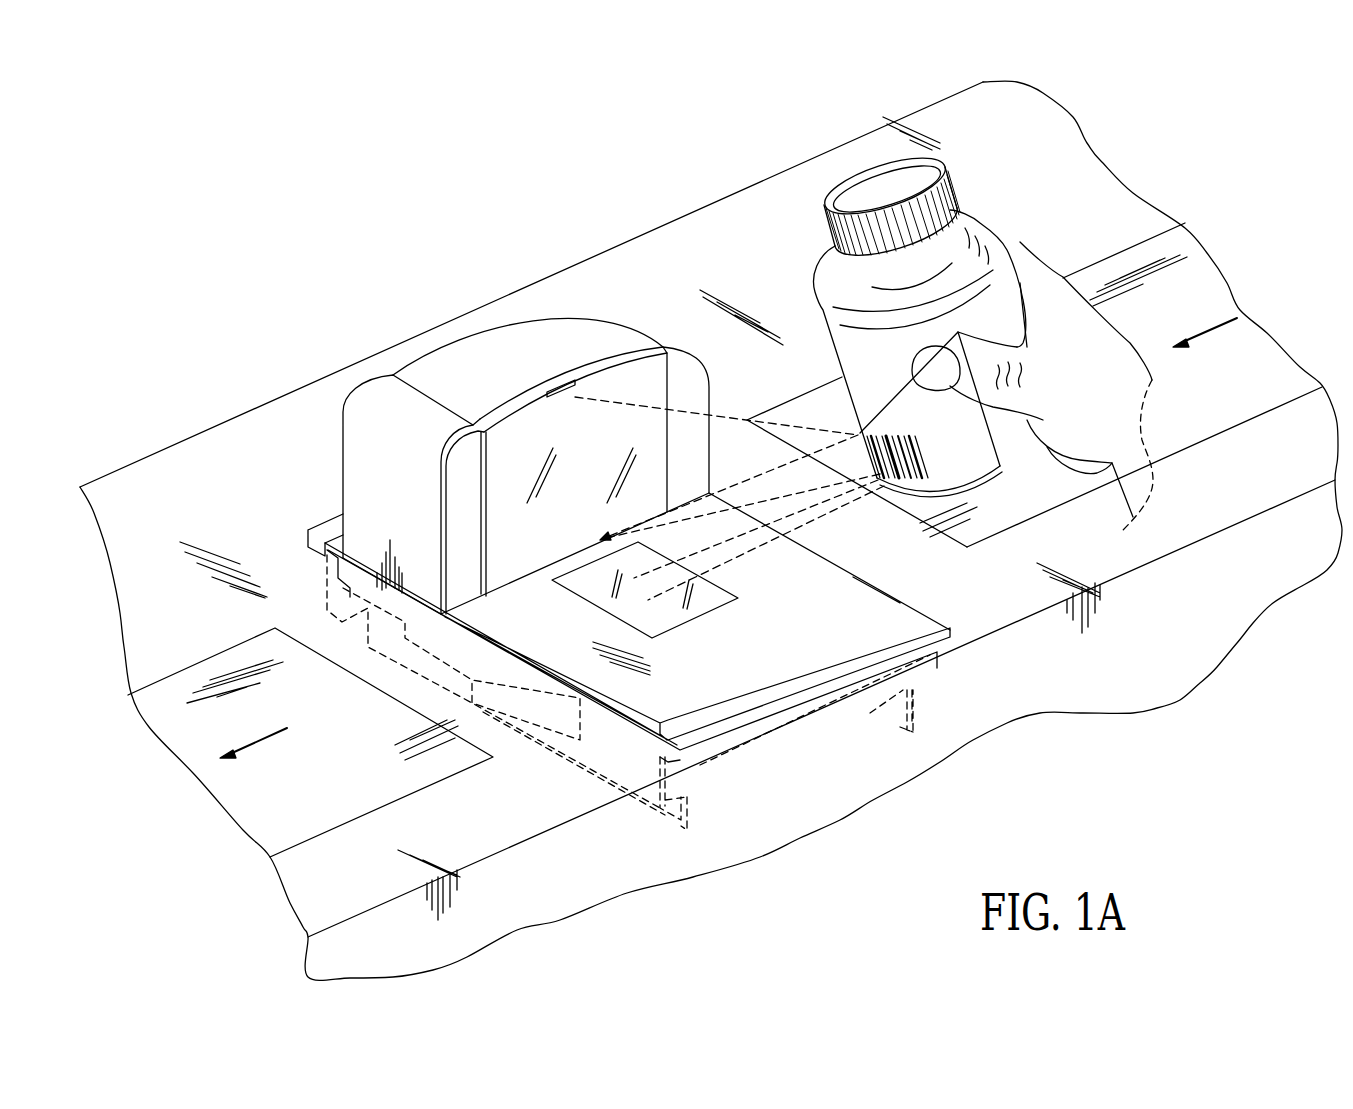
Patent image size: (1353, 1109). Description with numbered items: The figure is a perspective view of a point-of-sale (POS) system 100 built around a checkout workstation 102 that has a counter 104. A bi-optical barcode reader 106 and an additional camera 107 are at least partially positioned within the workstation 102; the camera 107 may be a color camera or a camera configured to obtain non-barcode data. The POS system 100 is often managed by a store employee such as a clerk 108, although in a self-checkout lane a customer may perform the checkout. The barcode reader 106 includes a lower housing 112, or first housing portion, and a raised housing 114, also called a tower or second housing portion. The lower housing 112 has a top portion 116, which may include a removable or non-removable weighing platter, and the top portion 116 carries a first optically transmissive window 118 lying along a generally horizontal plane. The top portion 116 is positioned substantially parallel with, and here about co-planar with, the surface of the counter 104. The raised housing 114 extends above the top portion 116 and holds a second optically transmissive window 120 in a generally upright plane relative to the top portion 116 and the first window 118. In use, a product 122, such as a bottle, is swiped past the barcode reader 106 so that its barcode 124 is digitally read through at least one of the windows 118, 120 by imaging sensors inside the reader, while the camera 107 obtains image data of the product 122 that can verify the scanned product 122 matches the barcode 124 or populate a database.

The point-of-sale (POS) system 100 is at (141, 199).
The workstation 102 is at (668, 186).
The counter 104 is at (1045, 117).
The bi-optical barcode reader 106 is at (357, 502).
The camera 107 is at (553, 387).
The clerk 108 is at (1117, 407).
The lower housing 112 is at (500, 846).
The raised housing 114 is at (610, 562).
The top portion 116 is at (648, 703).
The first optically transmissive window 118 is at (700, 606).
The second optically transmissive window 120 is at (507, 440).
The product 122 is at (954, 322).
The barcode 124 is at (913, 458).